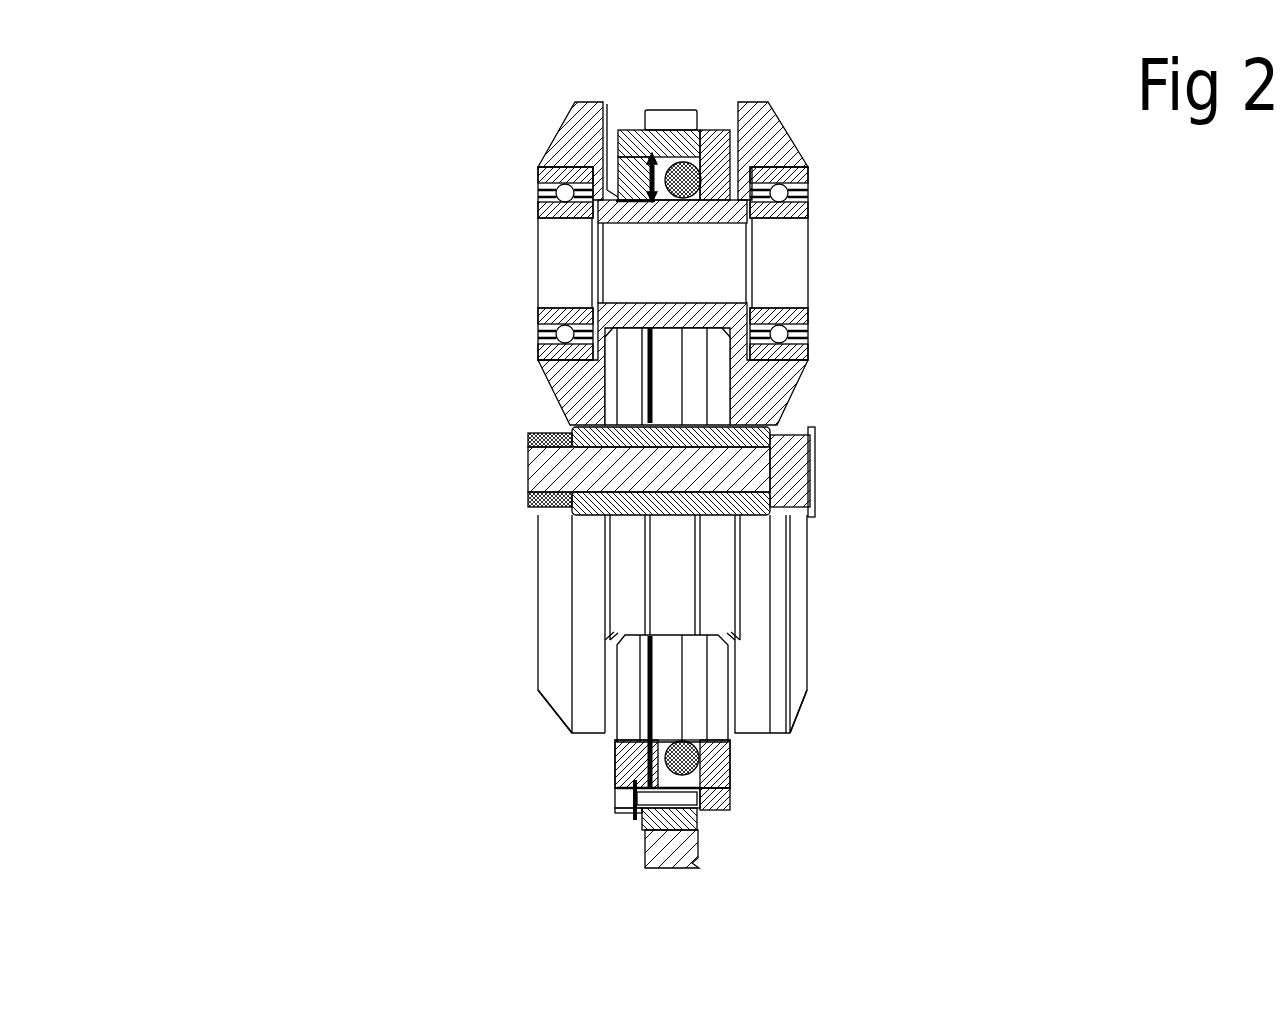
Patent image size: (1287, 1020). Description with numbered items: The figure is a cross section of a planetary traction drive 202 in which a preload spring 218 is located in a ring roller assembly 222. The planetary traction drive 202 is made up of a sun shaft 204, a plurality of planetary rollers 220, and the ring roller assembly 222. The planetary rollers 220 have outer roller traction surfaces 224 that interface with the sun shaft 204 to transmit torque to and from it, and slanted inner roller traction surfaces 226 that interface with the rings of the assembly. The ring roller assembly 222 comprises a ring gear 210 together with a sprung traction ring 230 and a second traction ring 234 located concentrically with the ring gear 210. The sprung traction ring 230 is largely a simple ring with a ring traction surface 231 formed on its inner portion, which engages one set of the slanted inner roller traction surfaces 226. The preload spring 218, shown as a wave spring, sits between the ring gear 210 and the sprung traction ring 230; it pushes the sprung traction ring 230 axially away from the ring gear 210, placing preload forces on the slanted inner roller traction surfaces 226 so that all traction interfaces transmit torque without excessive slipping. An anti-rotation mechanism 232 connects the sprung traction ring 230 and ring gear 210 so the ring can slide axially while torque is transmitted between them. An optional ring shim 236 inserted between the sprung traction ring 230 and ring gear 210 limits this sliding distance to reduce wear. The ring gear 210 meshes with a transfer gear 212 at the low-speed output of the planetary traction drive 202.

The planetary traction drive 202 is at (236, 211).
The sun shaft 204 is at (552, 473).
The ring gear 210 is at (662, 117).
The transfer gear 212 is at (673, 857).
The preload spring 218 is at (652, 203).
The plurality of planetary rollers 220 is at (778, 555).
The ring roller assembly 222 is at (707, 116).
The outer roller traction surfaces 224 is at (753, 735).
The slanted inner roller traction surfaces 226 is at (717, 636).
The sprung traction ring 230 is at (627, 168).
The ring traction surface 231 is at (628, 203).
The anti-rotation mechanism 232 is at (620, 828).
The second traction ring 234 is at (713, 181).
The ring shim 236 is at (632, 798).